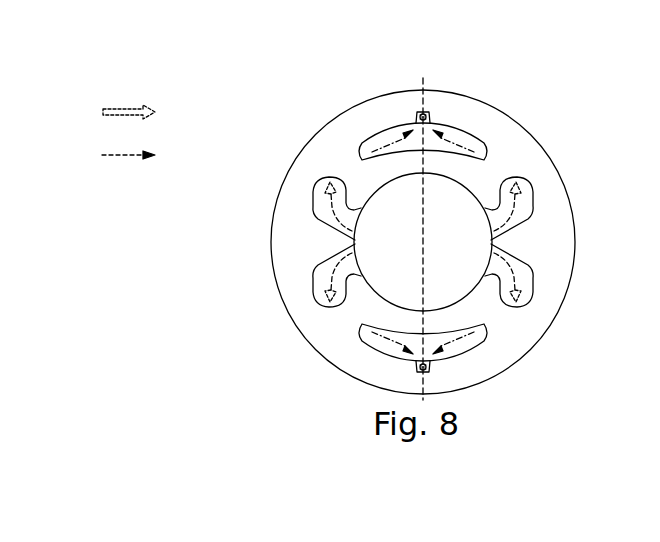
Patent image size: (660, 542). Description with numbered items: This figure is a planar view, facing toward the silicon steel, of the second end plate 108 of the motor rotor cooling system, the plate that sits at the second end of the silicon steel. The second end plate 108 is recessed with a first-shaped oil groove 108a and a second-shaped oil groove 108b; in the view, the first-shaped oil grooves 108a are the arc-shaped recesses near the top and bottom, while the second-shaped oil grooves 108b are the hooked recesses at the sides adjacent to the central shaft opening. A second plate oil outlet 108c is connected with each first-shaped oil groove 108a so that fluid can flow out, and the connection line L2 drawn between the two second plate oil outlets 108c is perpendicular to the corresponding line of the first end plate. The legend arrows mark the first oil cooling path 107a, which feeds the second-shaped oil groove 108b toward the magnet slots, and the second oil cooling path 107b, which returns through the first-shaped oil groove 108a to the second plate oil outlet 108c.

The second end plate 108 is at (308, 113).
The first-shaped oil groove 108a is at (458, 119).
The second-shaped oil groove 108b is at (315, 262).
The second plate oil outlet 108c is at (418, 110).
The connection line L2 is at (425, 227).
The first oil cooling path 107a is at (156, 113).
The second oil cooling path 107b is at (156, 155).